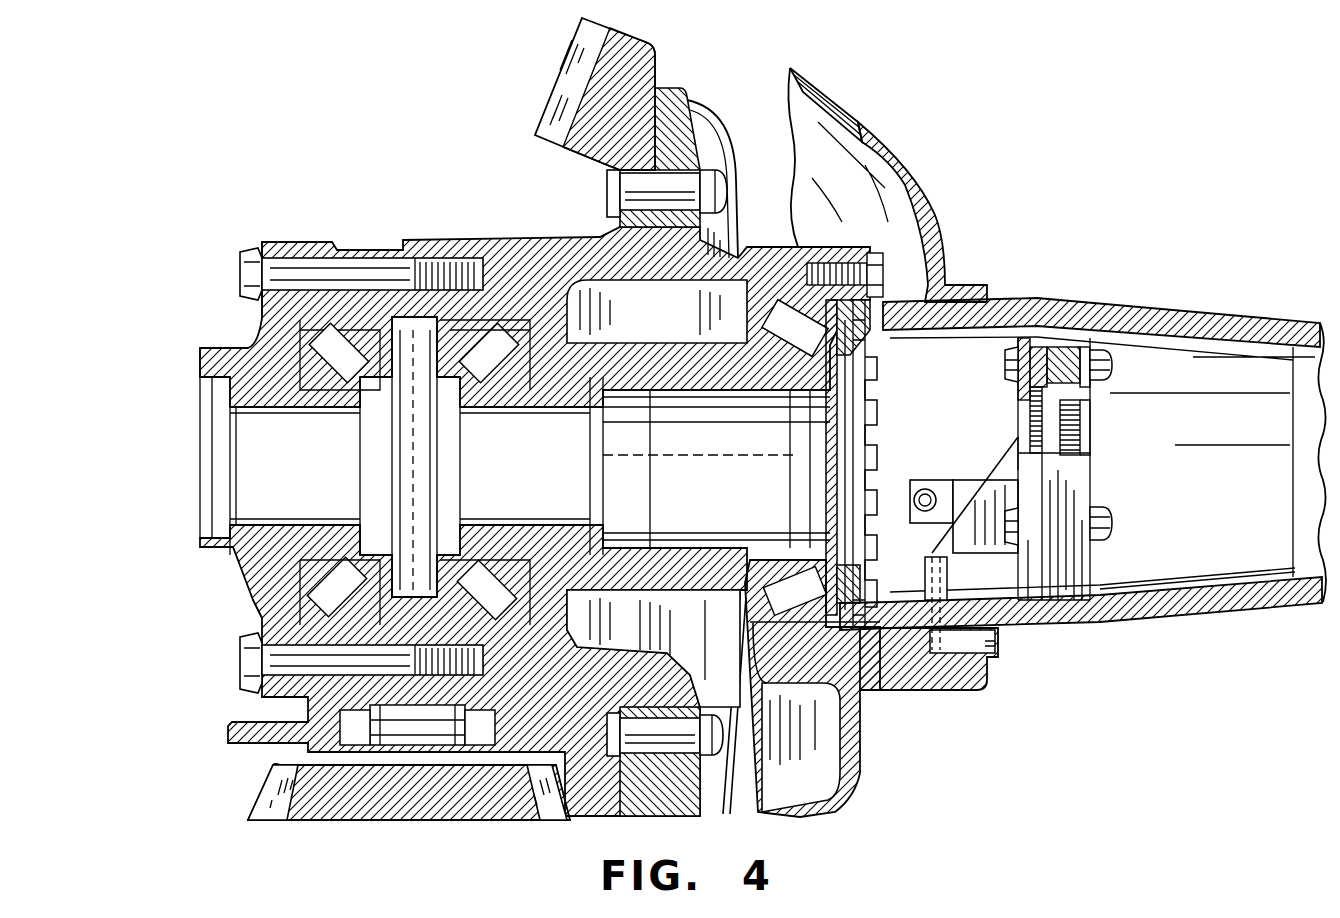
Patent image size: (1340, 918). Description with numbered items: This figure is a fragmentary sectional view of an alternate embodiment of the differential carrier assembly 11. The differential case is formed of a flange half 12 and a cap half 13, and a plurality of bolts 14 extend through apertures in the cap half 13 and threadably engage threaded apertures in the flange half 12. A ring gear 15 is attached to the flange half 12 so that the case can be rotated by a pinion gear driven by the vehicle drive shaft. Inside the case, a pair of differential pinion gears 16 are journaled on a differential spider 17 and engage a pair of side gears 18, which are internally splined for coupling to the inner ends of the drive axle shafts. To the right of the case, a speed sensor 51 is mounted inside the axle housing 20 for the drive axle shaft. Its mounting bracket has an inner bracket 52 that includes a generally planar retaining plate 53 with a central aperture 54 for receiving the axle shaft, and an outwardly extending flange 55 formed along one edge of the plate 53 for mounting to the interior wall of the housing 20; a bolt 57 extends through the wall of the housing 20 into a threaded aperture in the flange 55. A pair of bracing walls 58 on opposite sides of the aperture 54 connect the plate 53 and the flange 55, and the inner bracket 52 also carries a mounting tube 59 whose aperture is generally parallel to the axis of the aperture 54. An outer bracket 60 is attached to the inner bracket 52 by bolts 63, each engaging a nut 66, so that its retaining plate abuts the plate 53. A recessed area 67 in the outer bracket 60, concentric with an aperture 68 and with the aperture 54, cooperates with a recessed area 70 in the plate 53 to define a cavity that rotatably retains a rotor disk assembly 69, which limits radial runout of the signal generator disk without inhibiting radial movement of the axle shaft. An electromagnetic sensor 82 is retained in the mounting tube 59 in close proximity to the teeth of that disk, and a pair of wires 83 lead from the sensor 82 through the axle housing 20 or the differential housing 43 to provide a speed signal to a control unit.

The differential carrier assembly 11 is at (331, 157).
The flange half 12 is at (537, 246).
The cap half 13 is at (218, 352).
The bolts 14 is at (250, 272).
The ring gear 15 is at (563, 80).
The differential pinion gears 16 is at (443, 347).
The differential spider 17 is at (420, 474).
The side gears 18 is at (253, 483).
The axle housing 20 is at (1163, 620).
The differential housing 43 is at (847, 790).
The speed sensor 51 is at (1140, 411).
The inner bracket 52 is at (923, 572).
The retaining plate 53 is at (1033, 338).
The central aperture 54 is at (1023, 397).
The flange 55 is at (930, 590).
The bolt 57 is at (1002, 660).
The bracing walls 58 is at (1000, 465).
The mounting tube 59 is at (967, 490).
The outer bracket 60 is at (1090, 493).
The bolts 63 is at (1005, 362).
The nut 66 is at (1102, 350).
The recessed area 67 is at (1082, 345).
The aperture 68 is at (1090, 395).
The rotor disk assembly 69 is at (1090, 432).
The recessed area 70 is at (1053, 347).
The electromagnetic sensor 82 is at (912, 475).
The wires 83 is at (927, 490).